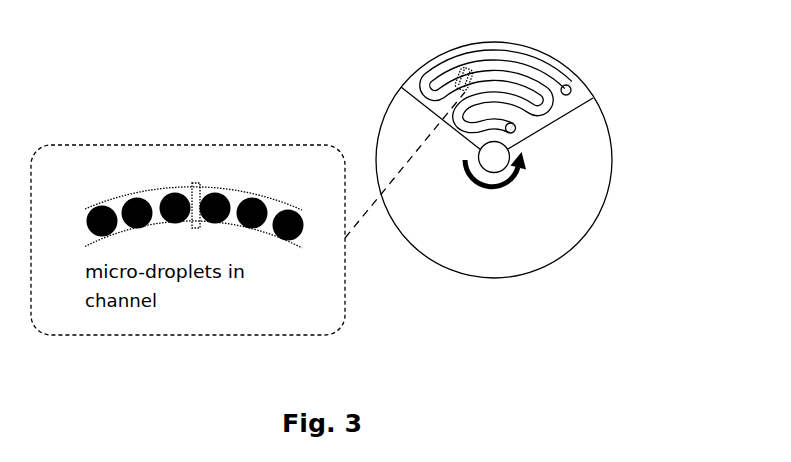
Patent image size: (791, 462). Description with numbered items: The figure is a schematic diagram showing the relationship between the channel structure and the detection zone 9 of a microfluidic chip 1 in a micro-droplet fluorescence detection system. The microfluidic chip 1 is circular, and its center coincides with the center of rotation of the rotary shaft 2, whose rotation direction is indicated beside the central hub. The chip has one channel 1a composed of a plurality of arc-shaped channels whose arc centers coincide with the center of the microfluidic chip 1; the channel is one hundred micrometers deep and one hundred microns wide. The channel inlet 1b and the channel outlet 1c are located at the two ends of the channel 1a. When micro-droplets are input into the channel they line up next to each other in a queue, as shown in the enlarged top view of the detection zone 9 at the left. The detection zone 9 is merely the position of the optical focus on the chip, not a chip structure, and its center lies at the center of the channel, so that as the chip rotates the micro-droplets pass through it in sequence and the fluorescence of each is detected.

The microfluidic chip 1 is at (508, 175).
The channel 1a is at (430, 91).
The channel inlet 1b is at (571, 89).
The channel outlet 1c is at (515, 131).
The rotary shaft 2 is at (504, 184).
The detection zone 9 is at (199, 183).